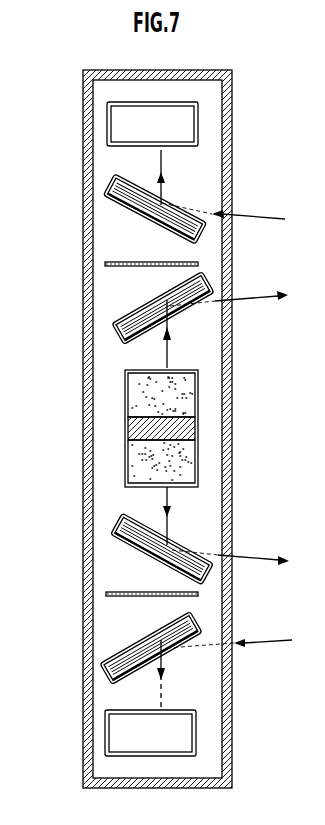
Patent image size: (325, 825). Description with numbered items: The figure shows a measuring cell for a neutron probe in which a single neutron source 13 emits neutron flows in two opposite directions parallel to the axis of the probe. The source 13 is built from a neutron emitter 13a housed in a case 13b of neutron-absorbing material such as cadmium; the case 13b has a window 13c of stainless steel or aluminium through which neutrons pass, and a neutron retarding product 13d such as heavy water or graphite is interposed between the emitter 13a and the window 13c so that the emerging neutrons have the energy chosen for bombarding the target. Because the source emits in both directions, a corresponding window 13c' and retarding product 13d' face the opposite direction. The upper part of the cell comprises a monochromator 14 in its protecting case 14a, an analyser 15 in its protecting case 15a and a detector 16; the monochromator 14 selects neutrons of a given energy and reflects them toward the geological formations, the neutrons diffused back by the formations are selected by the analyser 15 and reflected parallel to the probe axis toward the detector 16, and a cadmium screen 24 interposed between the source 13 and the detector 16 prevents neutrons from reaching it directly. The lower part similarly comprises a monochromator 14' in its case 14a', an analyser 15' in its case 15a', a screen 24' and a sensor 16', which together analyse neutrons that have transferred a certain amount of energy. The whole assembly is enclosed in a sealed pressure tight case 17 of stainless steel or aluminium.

The neutron source 13 is at (152, 417).
The neutron emitter 13a is at (135, 440).
The case 13b is at (128, 422).
The window 13c is at (110, 386).
The end face 13c' is at (110, 475).
The neutron retarding product 13d is at (109, 395).
The glass body 13d' is at (108, 463).
The monochromator 14 is at (119, 312).
The protecting case 14a is at (120, 314).
The mirror 14' is at (119, 548).
The mirror surface 14a' is at (121, 560).
The analyser 15 is at (116, 209).
The case 15a is at (118, 193).
The mirror 15' is at (113, 648).
The mirror surface 15a' is at (129, 658).
The detector 16 is at (115, 124).
The detector 16' is at (109, 733).
The sealed pressure tight case 17 is at (106, 71).
The screen 24 is at (109, 262).
The diaphragm plate 24' is at (109, 589).